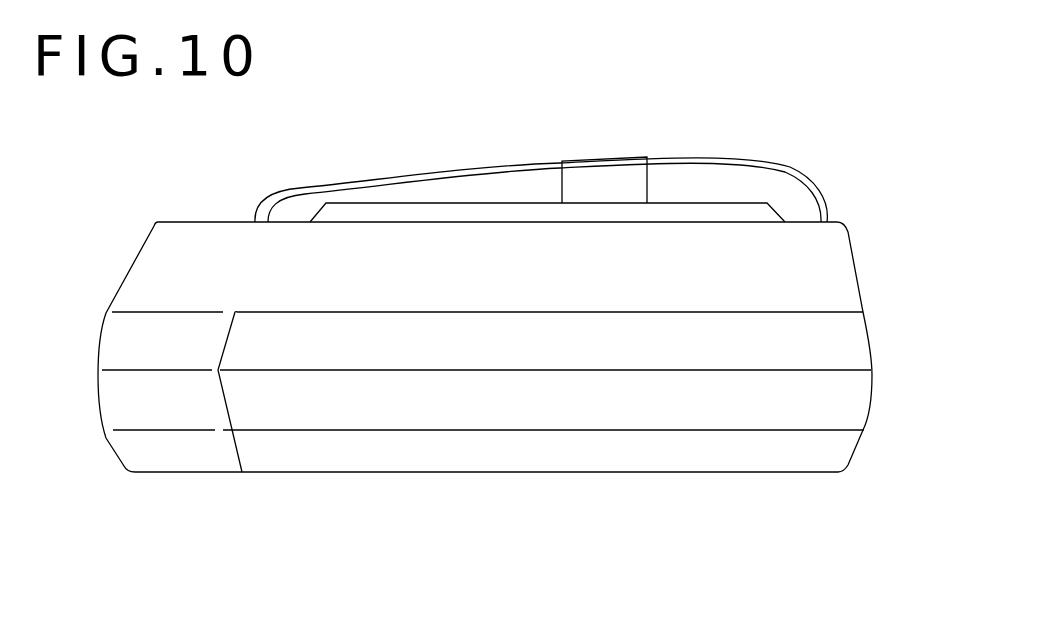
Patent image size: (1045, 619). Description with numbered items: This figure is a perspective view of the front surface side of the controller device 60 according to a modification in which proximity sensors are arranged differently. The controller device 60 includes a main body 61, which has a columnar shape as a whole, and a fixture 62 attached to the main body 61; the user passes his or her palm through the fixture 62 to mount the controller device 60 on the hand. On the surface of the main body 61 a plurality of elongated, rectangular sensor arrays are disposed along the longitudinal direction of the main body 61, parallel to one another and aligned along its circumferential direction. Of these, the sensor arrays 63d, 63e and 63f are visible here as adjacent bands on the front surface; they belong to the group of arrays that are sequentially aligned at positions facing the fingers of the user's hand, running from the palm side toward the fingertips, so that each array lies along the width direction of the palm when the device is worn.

The controller device 60 is at (700, 511).
The main body 61 is at (117, 338).
The fixture 62 is at (757, 160).
The sensor array 63d is at (838, 455).
The sensor array 63e is at (853, 403).
The sensor array 63f is at (857, 337).